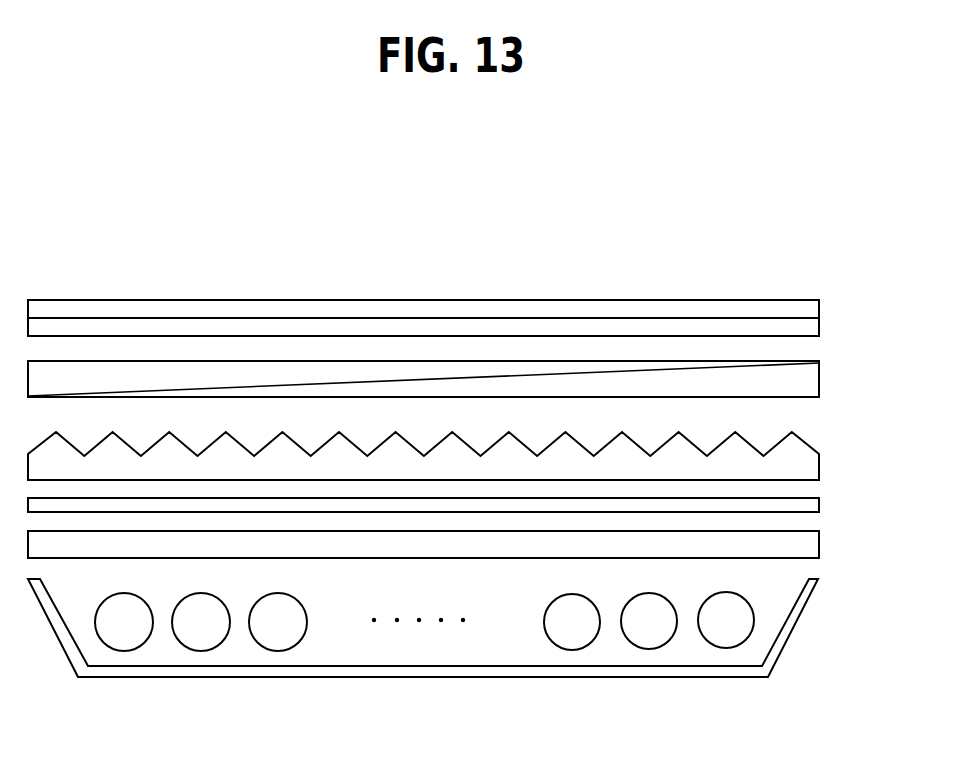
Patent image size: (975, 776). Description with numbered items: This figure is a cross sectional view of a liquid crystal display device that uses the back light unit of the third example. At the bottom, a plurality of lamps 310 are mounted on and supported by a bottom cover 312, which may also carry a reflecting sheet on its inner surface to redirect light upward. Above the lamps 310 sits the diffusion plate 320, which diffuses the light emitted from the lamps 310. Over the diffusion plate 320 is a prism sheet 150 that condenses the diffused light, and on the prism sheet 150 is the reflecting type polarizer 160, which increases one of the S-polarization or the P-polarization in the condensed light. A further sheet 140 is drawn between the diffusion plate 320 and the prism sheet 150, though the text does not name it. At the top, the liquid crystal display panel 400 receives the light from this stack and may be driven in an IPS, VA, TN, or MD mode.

The liquid crystal display panel 400 is at (820, 317).
The reflecting type polarizer 160 is at (809, 380).
The prism sheet 150 is at (809, 468).
The diffusion sheet 140 is at (809, 506).
The diffusion plate 320 is at (809, 544).
The bottom cover 312 is at (790, 628).
The lamps 310 is at (650, 629).